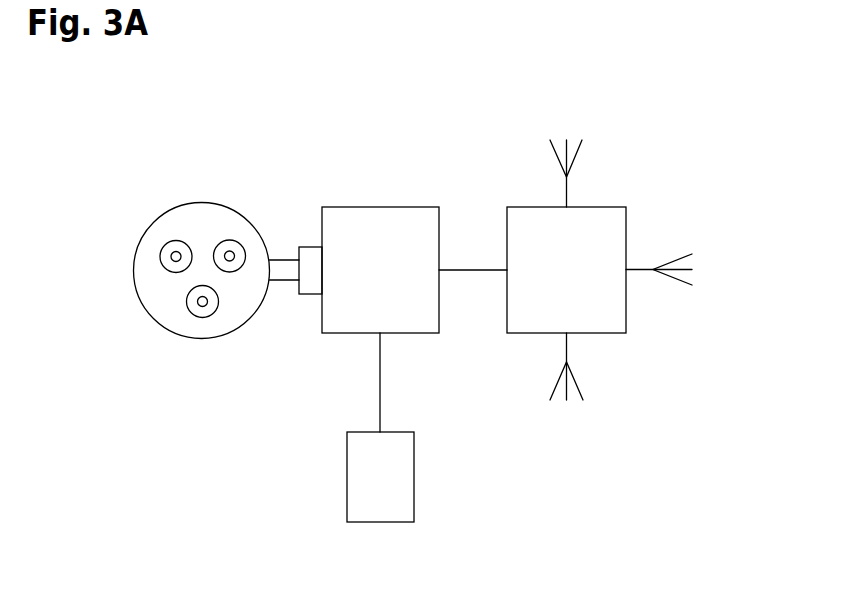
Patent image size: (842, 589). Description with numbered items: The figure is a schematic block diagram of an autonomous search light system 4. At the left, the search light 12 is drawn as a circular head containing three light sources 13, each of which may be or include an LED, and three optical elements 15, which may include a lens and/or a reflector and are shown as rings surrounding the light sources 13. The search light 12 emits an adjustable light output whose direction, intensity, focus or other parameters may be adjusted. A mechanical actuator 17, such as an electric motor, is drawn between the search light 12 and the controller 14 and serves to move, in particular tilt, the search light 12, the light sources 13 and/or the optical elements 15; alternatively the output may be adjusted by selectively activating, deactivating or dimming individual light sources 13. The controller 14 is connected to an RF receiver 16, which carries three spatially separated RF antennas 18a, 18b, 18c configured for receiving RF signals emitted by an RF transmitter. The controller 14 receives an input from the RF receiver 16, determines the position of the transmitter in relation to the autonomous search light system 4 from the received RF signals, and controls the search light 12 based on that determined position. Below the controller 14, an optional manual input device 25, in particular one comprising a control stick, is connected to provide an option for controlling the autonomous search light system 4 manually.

The autonomous search light system 4 is at (696, 112).
The search light 12 is at (222, 192).
The light source 13 is at (175, 257).
The controller 14 is at (380, 189).
The optical element 15 is at (237, 237).
The RF receiver 16 is at (617, 192).
The mechanical actuator 17 is at (308, 285).
The RF antenna 18a is at (573, 417).
The RF antenna 18b is at (571, 127).
The RF antenna 18c is at (698, 247).
The manual input device 25 is at (400, 477).